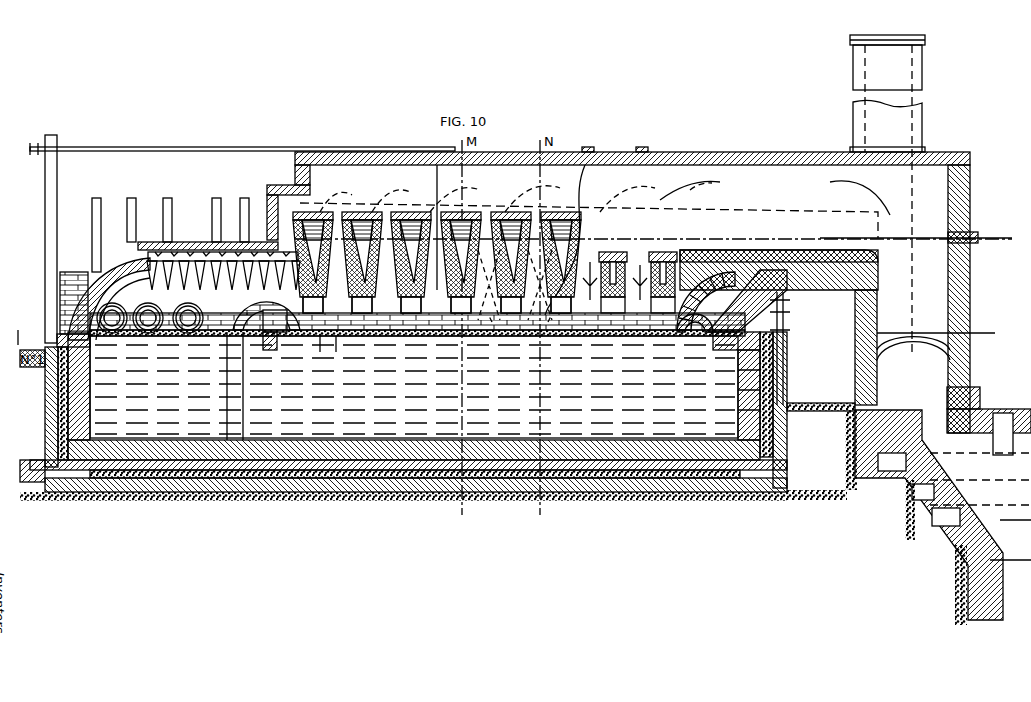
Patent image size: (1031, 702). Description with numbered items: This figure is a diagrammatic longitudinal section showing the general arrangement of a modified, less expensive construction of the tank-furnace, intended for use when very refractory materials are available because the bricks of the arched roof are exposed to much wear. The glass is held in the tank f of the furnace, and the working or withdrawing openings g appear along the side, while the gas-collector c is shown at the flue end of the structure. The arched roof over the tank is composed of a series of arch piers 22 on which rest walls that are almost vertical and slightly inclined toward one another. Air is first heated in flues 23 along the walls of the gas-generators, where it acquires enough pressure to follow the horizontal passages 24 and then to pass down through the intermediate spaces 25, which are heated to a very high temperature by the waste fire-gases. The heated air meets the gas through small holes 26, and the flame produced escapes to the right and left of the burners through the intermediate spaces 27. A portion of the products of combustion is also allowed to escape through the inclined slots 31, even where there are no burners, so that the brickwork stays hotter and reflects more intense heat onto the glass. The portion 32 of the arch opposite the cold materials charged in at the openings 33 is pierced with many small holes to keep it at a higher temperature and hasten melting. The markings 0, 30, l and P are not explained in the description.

The damper 0 is at (256, 191).
The arch piers 22 is at (464, 299).
The flues 23 is at (936, 517).
The horizontal passages 24 is at (605, 196).
The intermediate spaces 25 is at (437, 262).
The small holes 26 is at (630, 267).
The intermediate spaces 27 is at (416, 240).
The flame passage 30 is at (515, 286).
The inclined slots 31 is at (180, 310).
The portion of the arch 32 is at (663, 305).
The openings 33 is at (695, 325).
The working or withdrawing openings g is at (150, 318).
The tank of the furnace f is at (417, 375).
The damper l is at (299, 343).
The gas-collector c is at (936, 358).
The section line P is at (916, 238).